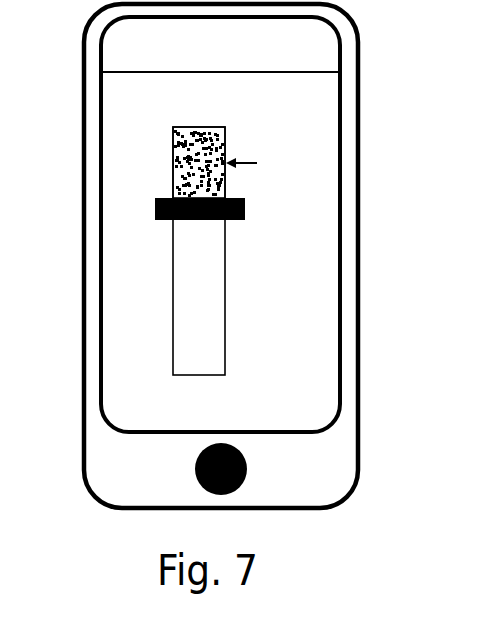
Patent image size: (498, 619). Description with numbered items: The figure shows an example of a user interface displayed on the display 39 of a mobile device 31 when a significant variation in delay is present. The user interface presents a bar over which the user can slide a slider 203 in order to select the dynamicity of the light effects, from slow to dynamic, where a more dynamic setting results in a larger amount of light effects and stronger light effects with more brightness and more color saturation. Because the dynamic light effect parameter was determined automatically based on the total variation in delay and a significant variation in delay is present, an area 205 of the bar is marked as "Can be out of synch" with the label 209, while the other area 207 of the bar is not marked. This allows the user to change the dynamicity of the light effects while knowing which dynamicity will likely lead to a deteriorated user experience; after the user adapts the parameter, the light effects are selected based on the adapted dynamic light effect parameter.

The mobile device 31 is at (82, 104).
The display 39 is at (97, 151).
The slider 203 is at (172, 222).
The area 205 is at (182, 155).
The other area 207 is at (188, 288).
The label 209 is at (325, 192).